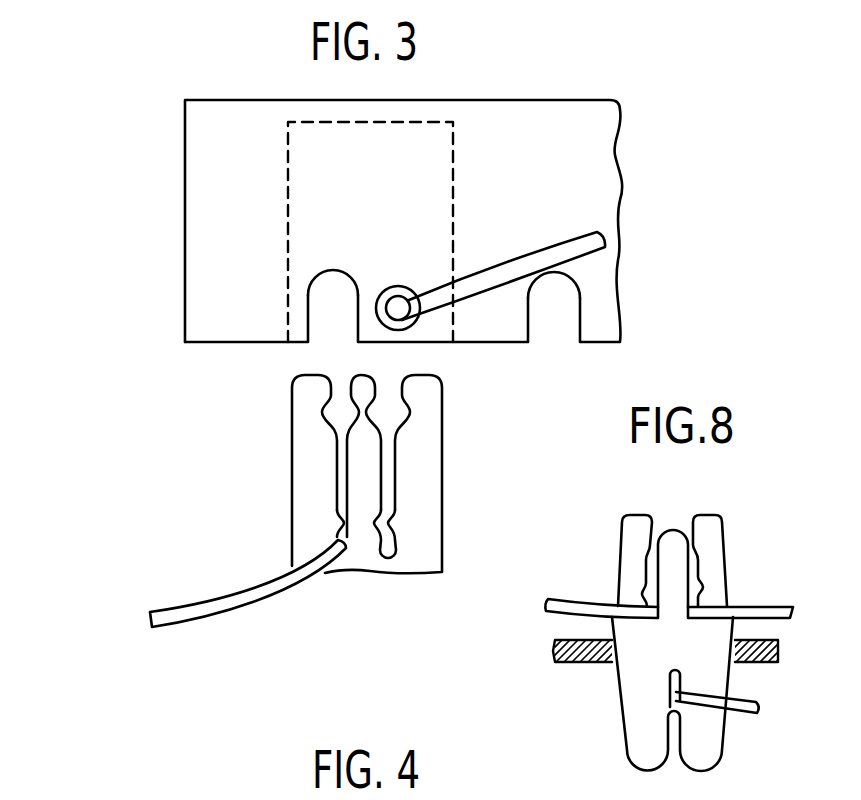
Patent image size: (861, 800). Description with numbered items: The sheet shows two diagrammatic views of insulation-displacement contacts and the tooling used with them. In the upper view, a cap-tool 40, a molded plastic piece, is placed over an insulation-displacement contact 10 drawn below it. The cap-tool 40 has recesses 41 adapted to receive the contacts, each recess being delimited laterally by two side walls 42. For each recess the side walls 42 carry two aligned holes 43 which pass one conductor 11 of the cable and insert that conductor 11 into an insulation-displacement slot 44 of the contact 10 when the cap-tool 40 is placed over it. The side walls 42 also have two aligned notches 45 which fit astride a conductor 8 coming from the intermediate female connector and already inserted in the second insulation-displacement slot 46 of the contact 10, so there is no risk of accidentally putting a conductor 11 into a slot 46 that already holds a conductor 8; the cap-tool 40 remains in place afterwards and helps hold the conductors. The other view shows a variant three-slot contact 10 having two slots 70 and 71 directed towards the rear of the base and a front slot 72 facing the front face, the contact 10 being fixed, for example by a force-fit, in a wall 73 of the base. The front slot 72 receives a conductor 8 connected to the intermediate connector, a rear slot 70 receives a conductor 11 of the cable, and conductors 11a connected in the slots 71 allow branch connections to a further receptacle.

In FIG. 3, the cap-tool 40 is at (160, 185).
In FIG. 3, the side wall 42 is at (313, 202).
In FIG. 3, the notch 45 is at (343, 278).
In FIG. 3, the hole 43 is at (397, 288).
In FIG. 3, the conductor 11 is at (588, 243).
In FIG. 8, the conductor 11 is at (573, 607).
In FIG. 8, the conductor 11a is at (758, 607).
In FIG. 3, the recess 41 is at (292, 352).
In FIG. 3, the second insulation-displacement slot 46 is at (343, 478).
In FIG. 3, the insulation-displacement slot 44 is at (388, 473).
In FIG. 3, the insulation-displacement contact 10 is at (422, 520).
In FIG. 8, the insulation-displacement contact 10 is at (632, 663).
In FIG. 3, the conductor 8 is at (235, 605).
In FIG. 8, the conductor 8 is at (748, 713).
In FIG. 8, the slot 70 is at (654, 560).
In FIG. 8, the slot 71 is at (697, 563).
In FIG. 8, the wall 73 is at (560, 665).
In FIG. 8, the front slot 72 is at (672, 738).